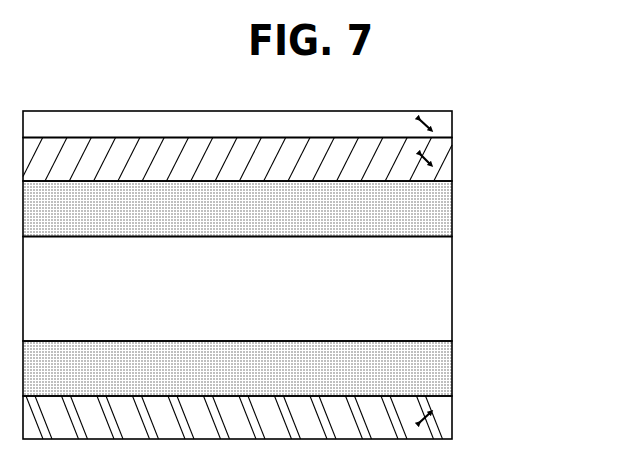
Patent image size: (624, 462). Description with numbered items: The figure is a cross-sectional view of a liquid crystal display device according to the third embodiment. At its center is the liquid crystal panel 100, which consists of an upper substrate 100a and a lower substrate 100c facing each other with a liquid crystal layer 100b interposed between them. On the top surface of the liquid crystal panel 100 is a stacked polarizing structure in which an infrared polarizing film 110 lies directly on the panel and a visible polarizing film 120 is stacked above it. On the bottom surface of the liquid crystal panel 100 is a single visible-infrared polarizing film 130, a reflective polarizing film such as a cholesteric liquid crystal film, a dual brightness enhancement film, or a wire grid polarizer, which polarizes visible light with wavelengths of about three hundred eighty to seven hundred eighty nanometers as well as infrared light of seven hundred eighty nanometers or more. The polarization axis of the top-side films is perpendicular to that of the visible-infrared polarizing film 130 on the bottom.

The visible polarizing film 120 is at (444, 124).
The infrared polarizing film 110 is at (445, 158).
The liquid crystal panel 100 is at (313, 288).
The upper substrate 100a is at (445, 208).
The liquid crystal layer 100b is at (443, 289).
The lower substrate 100c is at (276, 368).
The visible-infrared polarizing film 130 is at (445, 415).